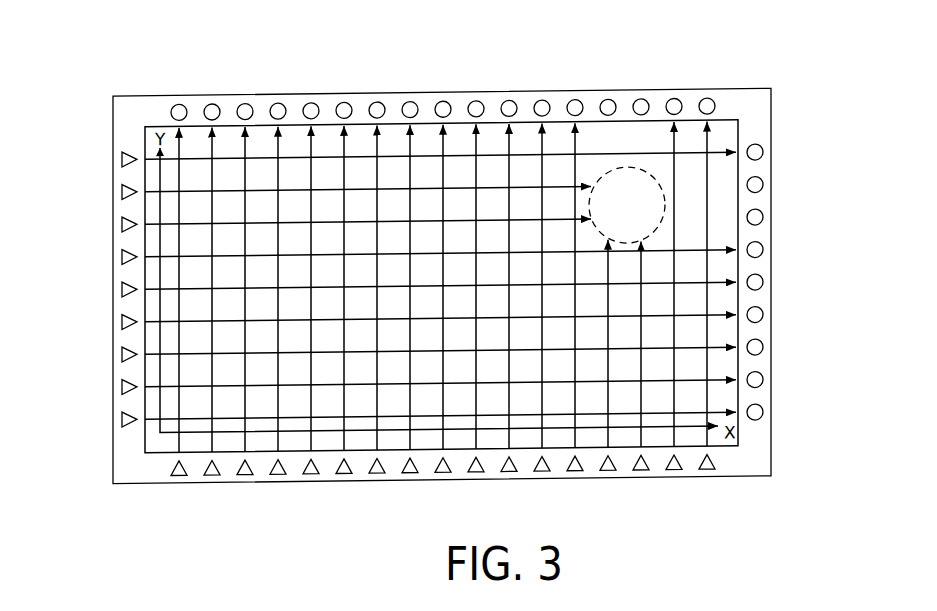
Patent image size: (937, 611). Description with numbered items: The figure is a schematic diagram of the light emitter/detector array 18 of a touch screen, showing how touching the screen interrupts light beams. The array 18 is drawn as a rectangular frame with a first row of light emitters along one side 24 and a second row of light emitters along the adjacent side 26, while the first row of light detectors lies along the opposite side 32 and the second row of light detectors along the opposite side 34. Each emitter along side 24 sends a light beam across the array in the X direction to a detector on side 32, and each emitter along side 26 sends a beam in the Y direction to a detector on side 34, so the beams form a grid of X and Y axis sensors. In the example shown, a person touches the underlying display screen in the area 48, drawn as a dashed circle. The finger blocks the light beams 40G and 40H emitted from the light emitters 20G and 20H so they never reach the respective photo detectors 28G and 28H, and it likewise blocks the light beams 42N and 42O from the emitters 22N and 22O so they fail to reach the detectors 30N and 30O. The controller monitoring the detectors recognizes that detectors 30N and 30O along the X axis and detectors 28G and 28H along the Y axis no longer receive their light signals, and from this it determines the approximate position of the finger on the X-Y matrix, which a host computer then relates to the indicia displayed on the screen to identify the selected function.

The light emitter/detector array 18 is at (413, 269).
The light emitter 20H is at (122, 160).
The light emitter 20G is at (122, 227).
The light emitter 22N is at (574, 486).
The light emitter 22O is at (648, 470).
The side 24 is at (76, 289).
The side 26 is at (451, 486).
The photo detector 28H is at (763, 182).
The photo detector 28G is at (763, 217).
The light detector 30N is at (579, 84).
The light detector 30O is at (642, 100).
The side 32 is at (797, 282).
The side 34 is at (443, 77).
The light beam 40G is at (358, 124).
The light beam 40H is at (228, 190).
The light beam 42N is at (612, 358).
The light beam 42O is at (645, 332).
The area 48 is at (654, 178).